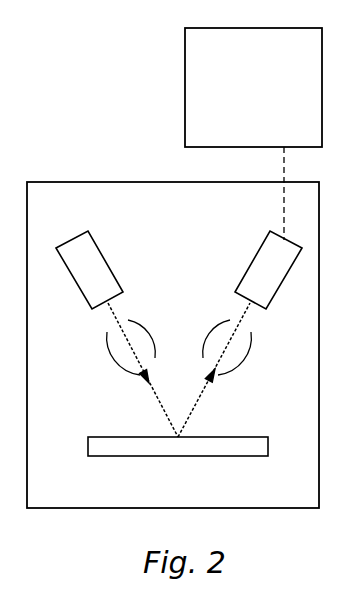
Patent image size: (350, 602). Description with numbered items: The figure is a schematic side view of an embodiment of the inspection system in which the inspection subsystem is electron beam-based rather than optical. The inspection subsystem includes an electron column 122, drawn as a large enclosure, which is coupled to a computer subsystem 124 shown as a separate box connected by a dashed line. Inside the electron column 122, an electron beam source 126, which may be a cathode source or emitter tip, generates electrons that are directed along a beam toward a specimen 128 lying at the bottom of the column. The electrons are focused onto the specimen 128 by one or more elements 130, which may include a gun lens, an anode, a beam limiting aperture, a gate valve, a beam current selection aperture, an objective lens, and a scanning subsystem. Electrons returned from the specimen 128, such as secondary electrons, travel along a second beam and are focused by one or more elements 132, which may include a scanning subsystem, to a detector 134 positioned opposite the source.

The electron column 122 is at (162, 182).
The computer subsystem 124 is at (253, 134).
The electron beam source 126 is at (95, 242).
The specimen 128 is at (223, 437).
The one or more elements 130 is at (108, 371).
The one or more elements 132 is at (250, 371).
The detector 134 is at (263, 242).